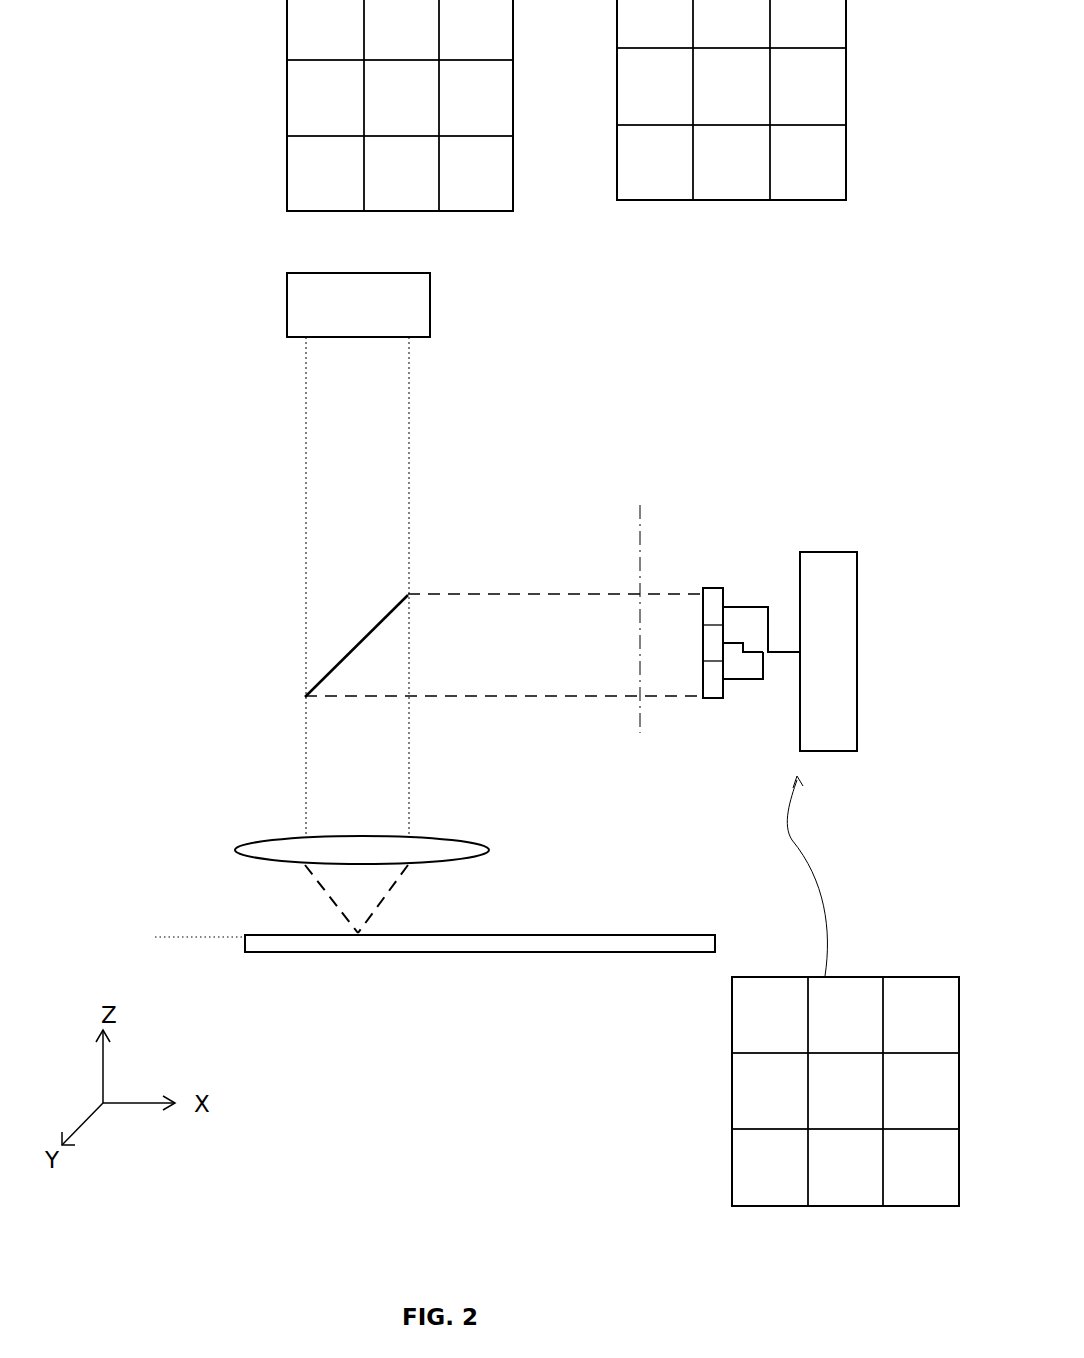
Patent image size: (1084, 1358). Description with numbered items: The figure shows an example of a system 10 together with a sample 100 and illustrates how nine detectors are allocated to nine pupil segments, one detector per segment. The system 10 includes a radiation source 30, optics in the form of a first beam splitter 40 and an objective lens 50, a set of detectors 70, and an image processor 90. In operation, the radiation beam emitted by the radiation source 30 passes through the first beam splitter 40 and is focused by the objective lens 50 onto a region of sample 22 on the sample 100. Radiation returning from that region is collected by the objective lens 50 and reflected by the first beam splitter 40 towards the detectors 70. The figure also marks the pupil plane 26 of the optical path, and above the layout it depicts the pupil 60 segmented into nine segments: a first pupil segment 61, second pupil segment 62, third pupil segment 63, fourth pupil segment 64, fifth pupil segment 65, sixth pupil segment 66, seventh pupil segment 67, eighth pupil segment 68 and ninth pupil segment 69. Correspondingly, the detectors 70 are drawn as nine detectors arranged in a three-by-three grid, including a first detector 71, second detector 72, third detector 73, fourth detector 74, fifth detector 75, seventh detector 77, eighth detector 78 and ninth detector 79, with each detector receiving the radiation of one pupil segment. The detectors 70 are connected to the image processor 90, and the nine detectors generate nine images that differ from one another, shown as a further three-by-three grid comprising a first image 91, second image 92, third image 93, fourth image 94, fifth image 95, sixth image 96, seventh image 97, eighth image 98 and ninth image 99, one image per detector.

The system 10 is at (279, 1160).
The region of sample 22 is at (186, 929).
The pupil plane 26 is at (637, 637).
The radiation source 30 is at (358, 305).
The first beam splitter 40 is at (358, 645).
The objective lens 50 is at (243, 842).
The pupil 60 is at (470, 212).
The first pupil segment 61 is at (325, 30).
The second pupil segment 62 is at (401, 30).
The third pupil segment 63 is at (476, 30).
The fourth pupil segment 64 is at (325, 98).
The fifth pupil segment 65 is at (401, 98).
The sixth pupil segment 66 is at (476, 98).
The seventh pupil segment 67 is at (325, 173).
The eighth pupil segment 68 is at (401, 173).
The ninth pupil segment 69 is at (476, 173).
The detectors 70 is at (690, 208).
The first detector 71 is at (655, 24).
The second detector 72 is at (731, 24).
The third detector 73 is at (808, 24).
The fourth detector 74 is at (655, 86).
The fifth detector 75 is at (731, 86).
The seventh detector 77 is at (731, 124).
The eighth detector 78 is at (731, 162).
The ninth detector 79 is at (808, 162).
The image processor 90 is at (780, 764).
The first image 91 is at (770, 1015).
The second image 92 is at (845, 1015).
The third image 93 is at (921, 1015).
The fourth image 94 is at (770, 1091).
The fifth image 95 is at (845, 1091).
The sixth image 96 is at (921, 1091).
The seventh image 97 is at (770, 1167).
The eighth image 98 is at (845, 1167).
The ninth image 99 is at (921, 1167).
The sample 100 is at (490, 952).